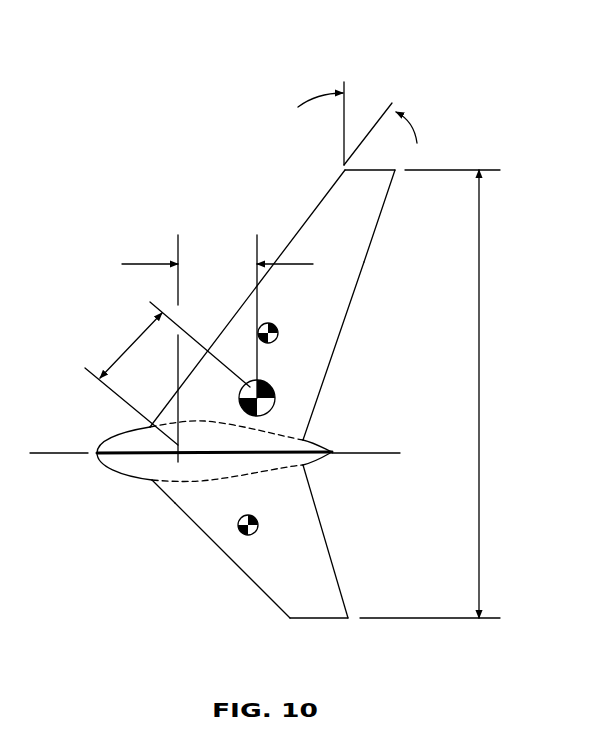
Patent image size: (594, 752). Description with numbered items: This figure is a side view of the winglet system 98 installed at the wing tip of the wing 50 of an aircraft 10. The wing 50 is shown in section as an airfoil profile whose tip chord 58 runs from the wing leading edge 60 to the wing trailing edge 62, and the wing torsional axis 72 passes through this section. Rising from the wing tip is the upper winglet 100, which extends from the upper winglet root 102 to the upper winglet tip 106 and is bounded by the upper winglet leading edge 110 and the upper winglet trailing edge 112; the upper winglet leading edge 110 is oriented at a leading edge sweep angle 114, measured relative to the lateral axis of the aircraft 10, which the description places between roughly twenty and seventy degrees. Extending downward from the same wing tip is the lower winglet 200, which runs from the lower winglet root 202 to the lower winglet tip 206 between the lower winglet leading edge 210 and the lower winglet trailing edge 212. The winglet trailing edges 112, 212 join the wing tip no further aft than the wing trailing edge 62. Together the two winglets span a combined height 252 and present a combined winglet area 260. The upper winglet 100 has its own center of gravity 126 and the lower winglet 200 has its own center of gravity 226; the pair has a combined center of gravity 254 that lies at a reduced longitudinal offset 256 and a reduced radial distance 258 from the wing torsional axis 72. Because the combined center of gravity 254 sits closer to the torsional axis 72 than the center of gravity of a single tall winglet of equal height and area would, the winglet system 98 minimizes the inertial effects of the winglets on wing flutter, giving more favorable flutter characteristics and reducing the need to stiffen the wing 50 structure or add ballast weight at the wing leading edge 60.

The winglet system 98 is at (228, 87).
The aircraft 10 is at (387, 192).
The upper winglet 100 is at (323, 240).
The upper winglet tip 106 is at (378, 170).
The upper winglet leading edge 110 is at (328, 192).
The upper winglet trailing edge 112 is at (377, 223).
The combined winglet area 260 is at (364, 262).
The center of gravity of the upper winglet 126 is at (278, 328).
The combined center of gravity 254 is at (273, 393).
The upper winglet root 102 is at (283, 437).
The leading edge sweep angle 114 is at (410, 125).
The wing 50 is at (97, 441).
The wing leading edge 60 is at (97, 460).
The tip chord 58 is at (137, 453).
The wing trailing edge 62 is at (333, 453).
The torsional axis 72 is at (152, 480).
The lower winglet root 202 is at (203, 480).
The lower winglet 200 is at (278, 582).
The lower winglet leading edge 210 is at (252, 577).
The lower winglet trailing edge 212 is at (331, 560).
The lower winglet tip 206 is at (323, 619).
The center of gravity of the lower winglet 226 is at (258, 522).
The combined height 252 is at (479, 338).
The longitudinal offset 256 is at (140, 264).
The radial distance 258 is at (122, 342).